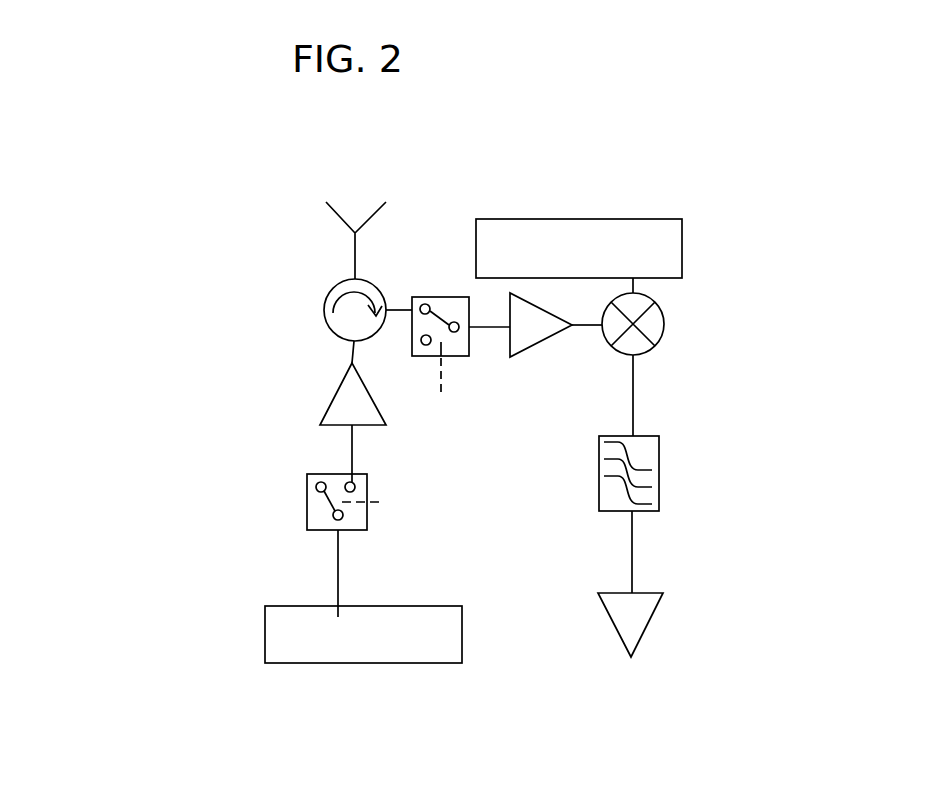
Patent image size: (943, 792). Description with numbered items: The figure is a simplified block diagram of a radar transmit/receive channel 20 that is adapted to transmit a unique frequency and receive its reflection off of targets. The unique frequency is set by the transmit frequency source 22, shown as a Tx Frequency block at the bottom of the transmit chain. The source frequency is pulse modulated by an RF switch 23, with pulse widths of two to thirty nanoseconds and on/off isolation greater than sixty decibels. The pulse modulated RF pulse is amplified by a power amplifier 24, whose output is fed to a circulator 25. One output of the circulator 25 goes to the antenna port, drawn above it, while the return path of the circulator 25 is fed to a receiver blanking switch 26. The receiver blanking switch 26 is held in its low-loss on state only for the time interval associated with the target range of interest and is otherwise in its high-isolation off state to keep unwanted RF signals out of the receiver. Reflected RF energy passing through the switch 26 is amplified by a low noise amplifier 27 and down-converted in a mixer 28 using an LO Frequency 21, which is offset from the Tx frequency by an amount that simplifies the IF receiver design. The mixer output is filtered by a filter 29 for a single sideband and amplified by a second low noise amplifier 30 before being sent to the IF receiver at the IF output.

The Tx/Rx channel 20 is at (145, 193).
The LO Frequency 21 is at (667, 219).
The transmit frequency source 22 is at (265, 642).
The RF switch 23 is at (307, 526).
The power amplifier 24 is at (323, 421).
The circulator 25 is at (326, 305).
The receiver blanking switch 26 is at (441, 358).
The low noise amplifier 27 is at (543, 340).
The mixer 28 is at (660, 343).
The filter 29 is at (640, 511).
The low noise amplifier 30 is at (648, 627).